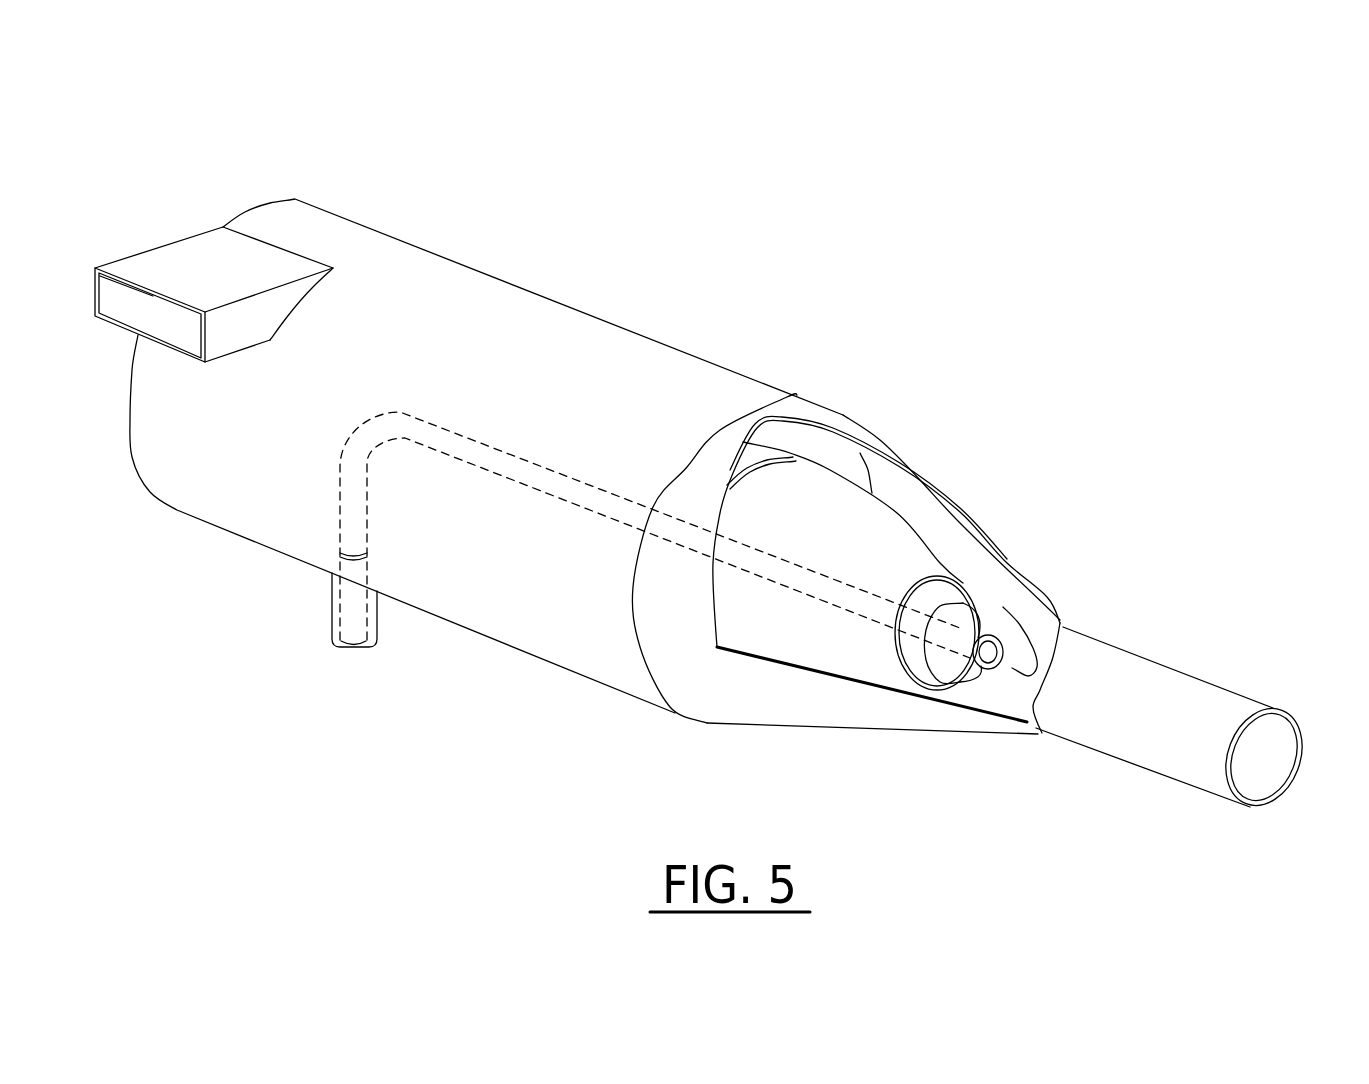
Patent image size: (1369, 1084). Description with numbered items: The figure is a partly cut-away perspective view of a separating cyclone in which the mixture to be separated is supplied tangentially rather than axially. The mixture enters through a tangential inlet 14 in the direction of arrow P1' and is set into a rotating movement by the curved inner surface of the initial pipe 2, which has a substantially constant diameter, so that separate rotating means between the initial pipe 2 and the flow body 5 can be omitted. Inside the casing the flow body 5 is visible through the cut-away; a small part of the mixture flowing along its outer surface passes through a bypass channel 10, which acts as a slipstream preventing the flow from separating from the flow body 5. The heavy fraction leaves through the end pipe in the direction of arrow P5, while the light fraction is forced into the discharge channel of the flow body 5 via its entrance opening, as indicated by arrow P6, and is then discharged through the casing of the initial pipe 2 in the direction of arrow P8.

The initial pipe 2 is at (590, 332).
The tangential inlet 14 is at (147, 263).
The flow body 5 is at (890, 545).
The bypass channel 10 is at (757, 463).
The arrow P8 is at (355, 663).
The arrow P1' is at (100, 323).
The arrow P6 is at (983, 648).
The arrow P5 is at (1255, 755).